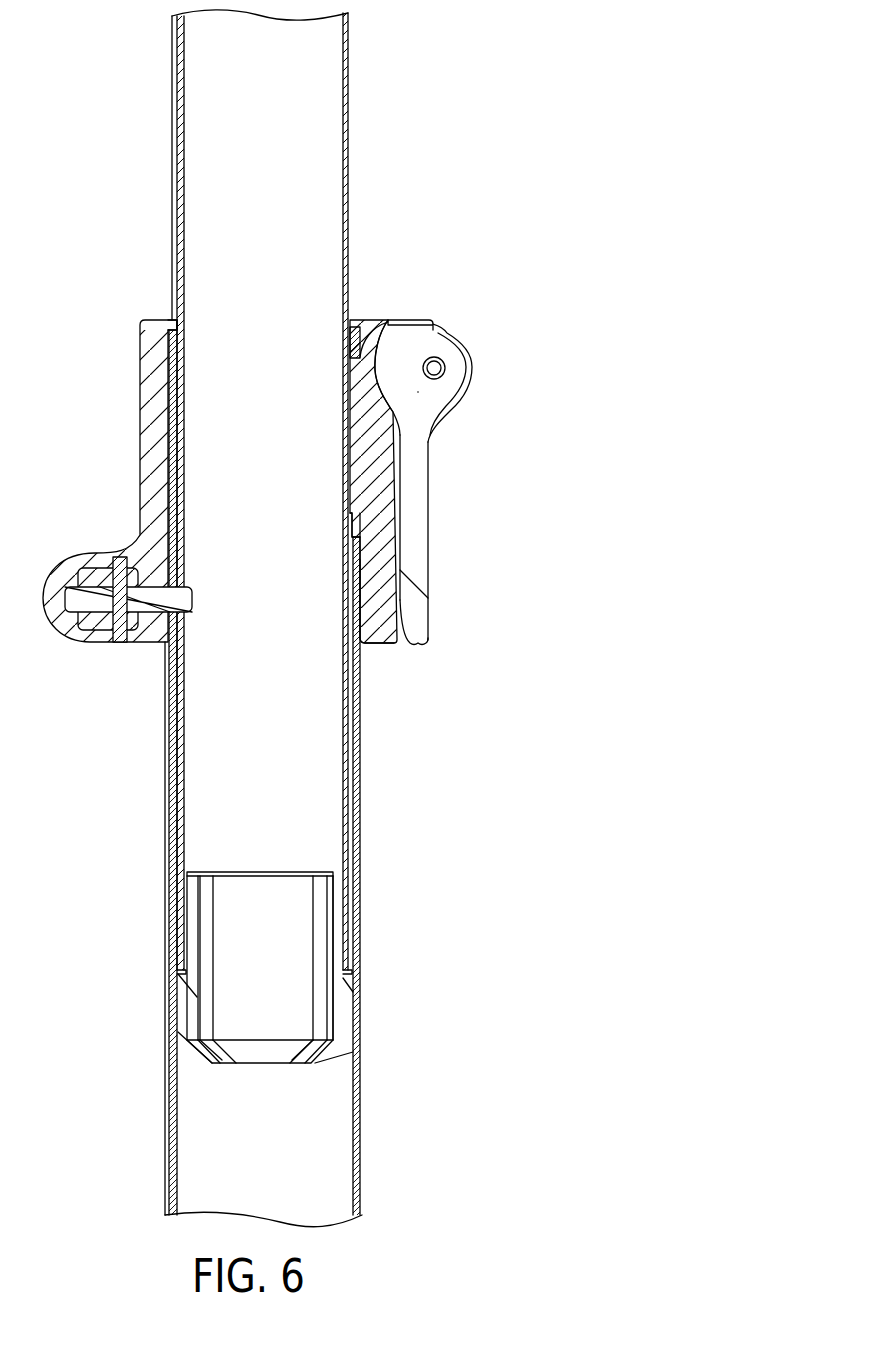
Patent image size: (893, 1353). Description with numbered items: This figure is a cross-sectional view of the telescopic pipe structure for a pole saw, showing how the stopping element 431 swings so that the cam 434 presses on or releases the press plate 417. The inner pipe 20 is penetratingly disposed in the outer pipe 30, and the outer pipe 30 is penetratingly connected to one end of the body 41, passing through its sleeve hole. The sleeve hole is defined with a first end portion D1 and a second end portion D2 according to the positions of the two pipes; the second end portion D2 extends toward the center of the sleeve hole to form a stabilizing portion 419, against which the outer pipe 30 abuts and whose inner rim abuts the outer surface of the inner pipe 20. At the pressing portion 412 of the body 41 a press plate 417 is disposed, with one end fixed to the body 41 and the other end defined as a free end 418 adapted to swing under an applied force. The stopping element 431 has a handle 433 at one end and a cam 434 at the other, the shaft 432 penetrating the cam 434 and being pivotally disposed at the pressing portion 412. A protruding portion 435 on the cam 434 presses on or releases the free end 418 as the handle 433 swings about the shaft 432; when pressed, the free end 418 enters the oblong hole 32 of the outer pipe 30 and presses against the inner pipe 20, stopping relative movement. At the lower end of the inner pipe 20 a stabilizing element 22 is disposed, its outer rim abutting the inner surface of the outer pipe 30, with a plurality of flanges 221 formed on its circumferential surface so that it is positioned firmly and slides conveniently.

The inner pipe 20 is at (348, 155).
The outer pipe 30 is at (360, 795).
The oblong hole 32 is at (355, 512).
The body 41 is at (150, 366).
The stabilizing portion 419 is at (178, 320).
The first end portion D1 is at (150, 642).
The second end portion D2 is at (373, 322).
The pressing portion 412 is at (390, 335).
The free end 418 is at (370, 438).
The press plate 417 is at (380, 555).
The protruding portion 435 is at (408, 340).
The cam 434 is at (455, 360).
The shaft 432 is at (445, 372).
The stopping element 431 is at (415, 488).
The handle 433 is at (420, 615).
The stabilizing element 22 is at (300, 1005).
The flanges 221 is at (350, 983).